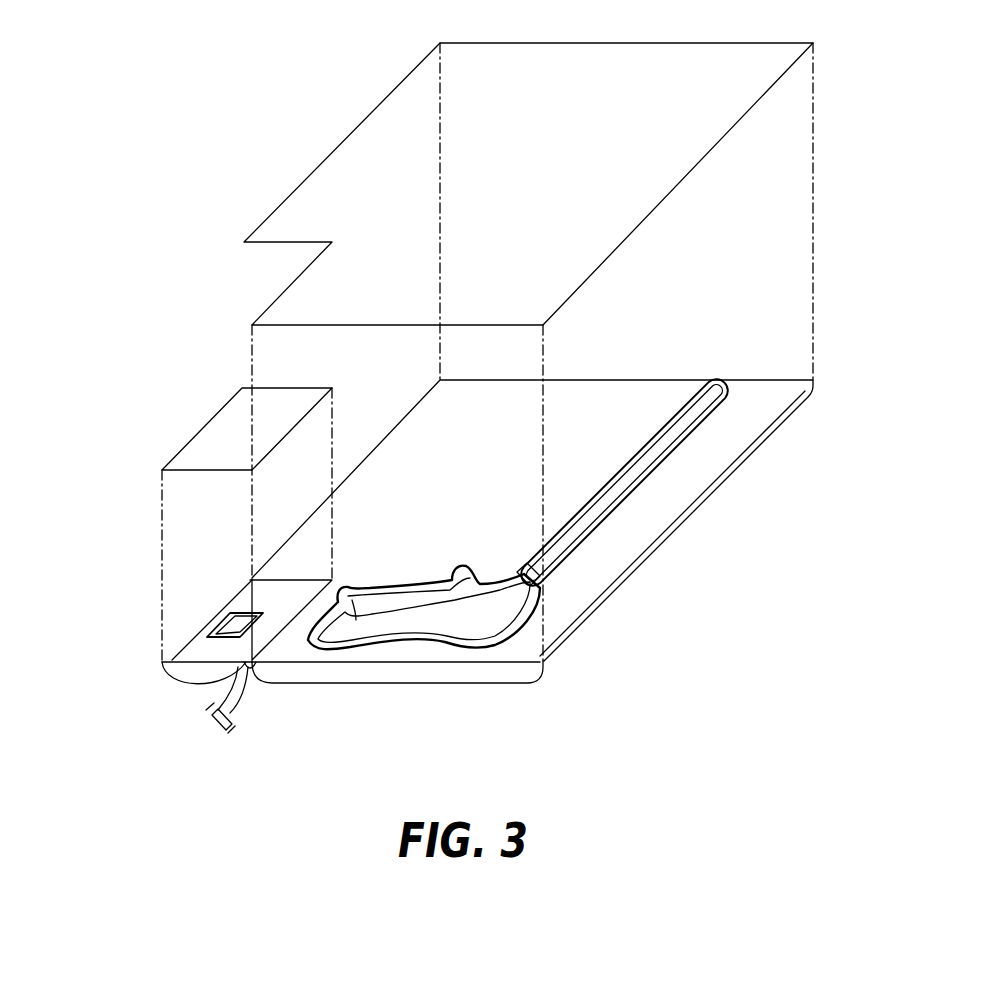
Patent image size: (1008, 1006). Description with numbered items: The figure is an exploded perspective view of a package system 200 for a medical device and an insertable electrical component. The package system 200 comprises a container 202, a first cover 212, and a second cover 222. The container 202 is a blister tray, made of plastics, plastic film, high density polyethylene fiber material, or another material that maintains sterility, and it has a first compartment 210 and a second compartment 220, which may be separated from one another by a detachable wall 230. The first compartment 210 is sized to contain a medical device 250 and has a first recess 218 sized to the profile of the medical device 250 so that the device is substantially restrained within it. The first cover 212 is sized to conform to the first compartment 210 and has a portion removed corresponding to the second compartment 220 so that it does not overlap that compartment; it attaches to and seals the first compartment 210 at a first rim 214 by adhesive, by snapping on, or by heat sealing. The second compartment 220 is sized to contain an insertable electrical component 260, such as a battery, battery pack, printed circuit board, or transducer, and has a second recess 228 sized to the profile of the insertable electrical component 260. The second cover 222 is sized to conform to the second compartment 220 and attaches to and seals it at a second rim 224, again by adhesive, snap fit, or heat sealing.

The package system 200 is at (148, 275).
The container 202 is at (648, 617).
The first compartment 210 is at (528, 531).
The first cover 212 is at (753, 107).
The first rim 214 is at (780, 419).
The first recess 218 is at (663, 455).
The second compartment 220 is at (192, 650).
The second cover 222 is at (192, 440).
The second rim 224 is at (207, 606).
The second recess 228 is at (205, 637).
The detachable wall 230 is at (233, 678).
The medical device 250 is at (468, 628).
The insertable electrical component 260 is at (232, 618).